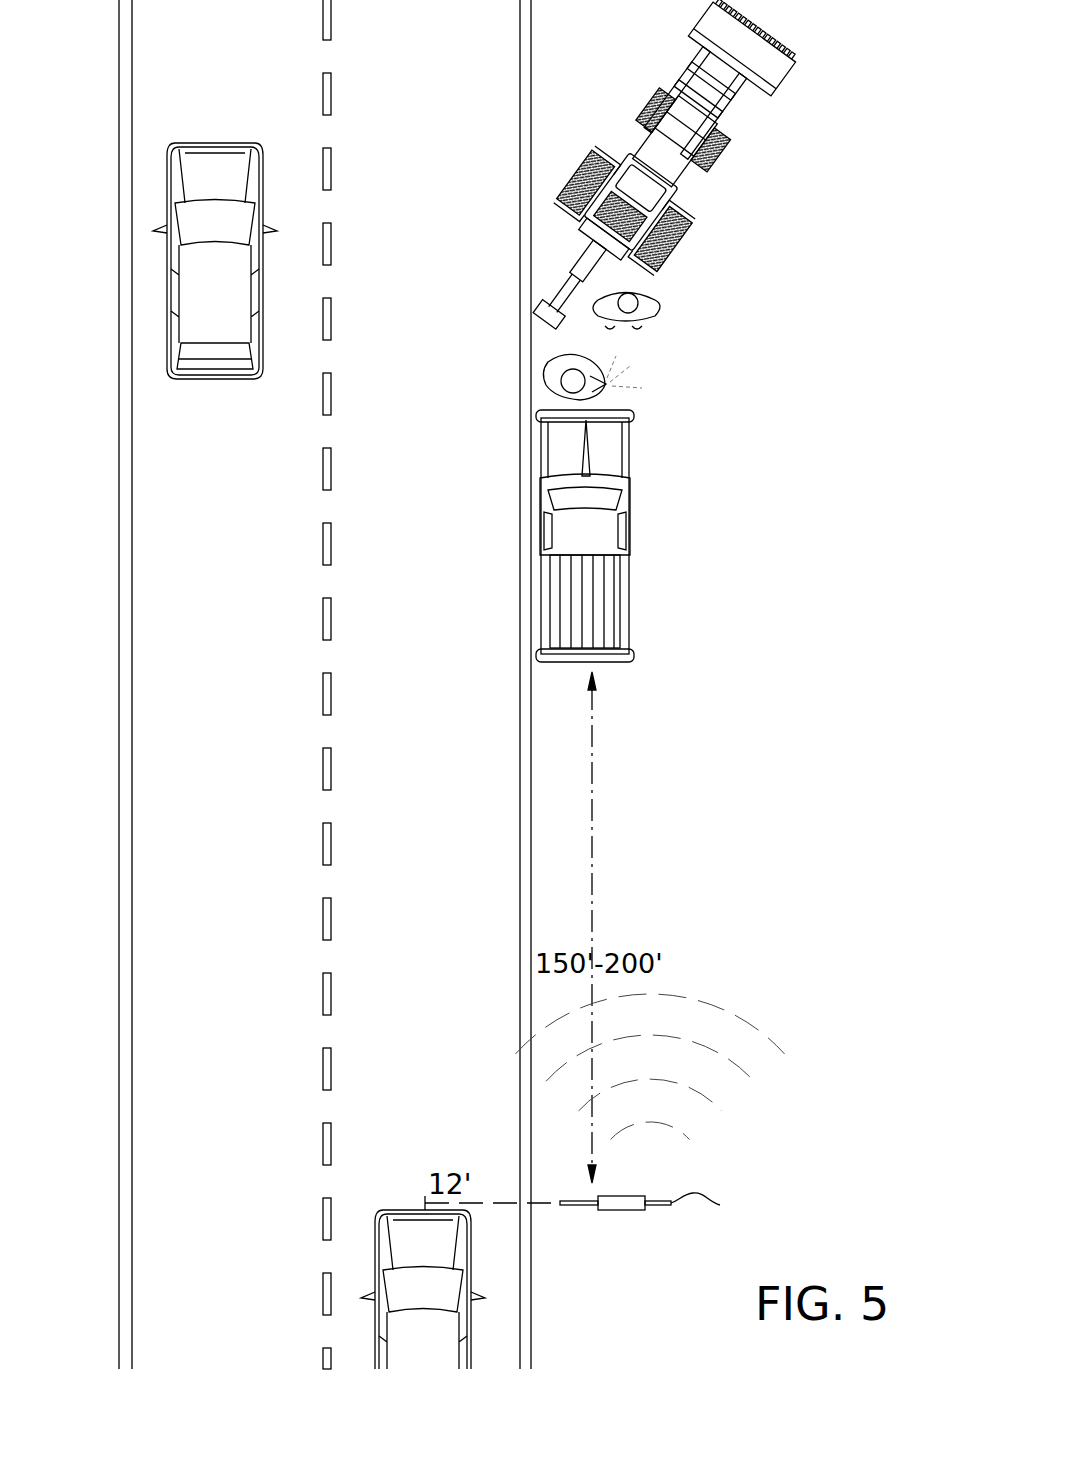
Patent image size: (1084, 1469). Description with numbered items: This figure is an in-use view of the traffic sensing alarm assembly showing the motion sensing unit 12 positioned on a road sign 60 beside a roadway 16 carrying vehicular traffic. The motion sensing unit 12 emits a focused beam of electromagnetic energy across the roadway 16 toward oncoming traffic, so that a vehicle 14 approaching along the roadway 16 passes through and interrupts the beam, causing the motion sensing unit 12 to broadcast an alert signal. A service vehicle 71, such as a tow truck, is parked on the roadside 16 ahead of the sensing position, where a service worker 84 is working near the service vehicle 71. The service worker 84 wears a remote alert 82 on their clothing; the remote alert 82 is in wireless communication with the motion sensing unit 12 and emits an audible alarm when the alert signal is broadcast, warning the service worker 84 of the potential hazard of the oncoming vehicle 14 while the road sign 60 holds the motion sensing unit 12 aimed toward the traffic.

The service worker 84 is at (578, 357).
The remote alert 82 is at (603, 392).
The service vehicle 71 is at (630, 585).
The roadway 16 is at (458, 862).
The road sign 60 is at (724, 1203).
The motion sensing unit 12 is at (620, 1213).
The vehicle 14 is at (453, 1250).